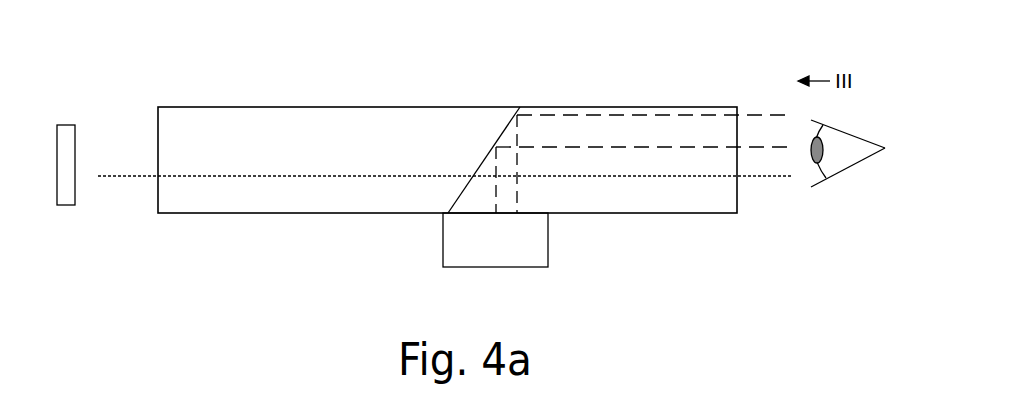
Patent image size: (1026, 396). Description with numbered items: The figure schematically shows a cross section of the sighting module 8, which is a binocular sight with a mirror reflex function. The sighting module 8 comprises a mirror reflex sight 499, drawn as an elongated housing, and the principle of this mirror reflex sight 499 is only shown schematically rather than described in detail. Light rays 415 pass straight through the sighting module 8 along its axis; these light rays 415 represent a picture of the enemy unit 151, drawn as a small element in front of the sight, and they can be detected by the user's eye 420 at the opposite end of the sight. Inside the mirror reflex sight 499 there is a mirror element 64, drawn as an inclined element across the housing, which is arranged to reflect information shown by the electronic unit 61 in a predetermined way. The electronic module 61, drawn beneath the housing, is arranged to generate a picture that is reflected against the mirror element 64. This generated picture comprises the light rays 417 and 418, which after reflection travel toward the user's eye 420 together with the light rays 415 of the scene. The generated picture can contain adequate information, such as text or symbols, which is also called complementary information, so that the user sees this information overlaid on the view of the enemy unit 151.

The sighting module 8 is at (475, 206).
The mirror reflex sight 499 is at (295, 107).
The mirror element 64 is at (478, 172).
The electronic unit 61 is at (508, 251).
The light ray 417 is at (637, 115).
The light ray 418 is at (597, 147).
The light rays 415 is at (317, 177).
The enemy unit 151 is at (75, 203).
The user's eye 420 is at (826, 178).